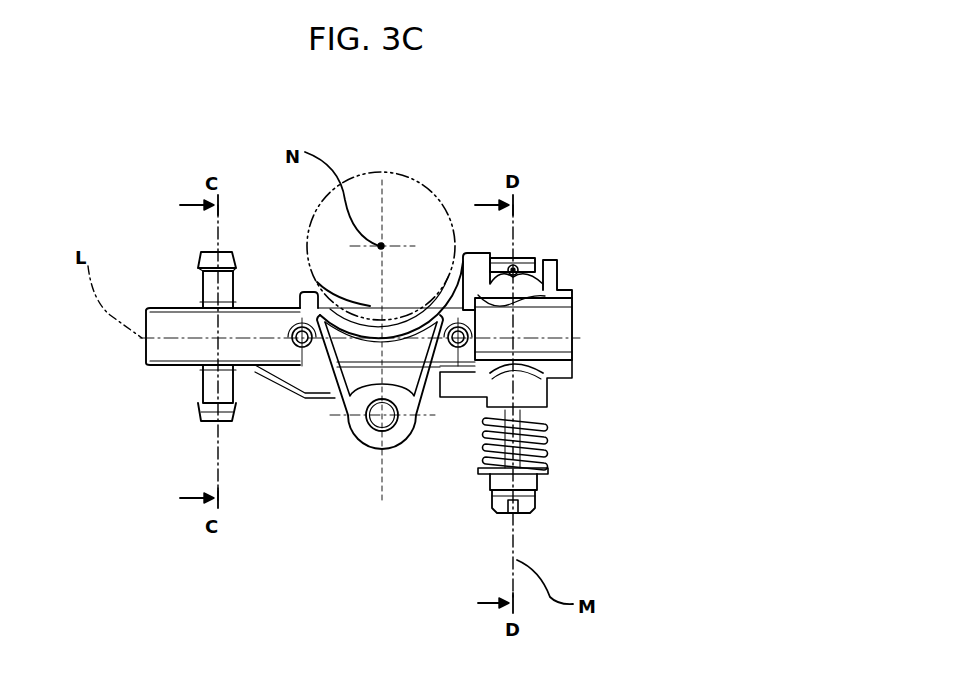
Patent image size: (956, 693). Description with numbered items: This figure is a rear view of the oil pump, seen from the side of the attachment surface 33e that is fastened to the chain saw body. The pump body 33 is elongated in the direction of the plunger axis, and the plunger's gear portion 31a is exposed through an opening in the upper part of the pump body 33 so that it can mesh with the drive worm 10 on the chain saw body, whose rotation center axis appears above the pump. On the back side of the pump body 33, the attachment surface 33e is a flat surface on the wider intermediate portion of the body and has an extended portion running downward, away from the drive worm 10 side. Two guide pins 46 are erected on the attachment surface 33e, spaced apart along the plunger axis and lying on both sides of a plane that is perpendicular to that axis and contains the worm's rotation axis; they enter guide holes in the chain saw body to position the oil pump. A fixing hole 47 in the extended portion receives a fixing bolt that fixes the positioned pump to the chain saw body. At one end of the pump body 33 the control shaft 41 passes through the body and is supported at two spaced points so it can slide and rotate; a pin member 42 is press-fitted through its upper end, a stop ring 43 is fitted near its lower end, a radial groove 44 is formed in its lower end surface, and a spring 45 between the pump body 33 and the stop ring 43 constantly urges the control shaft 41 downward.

The drive worm 10 is at (408, 171).
The gear portion 31a is at (317, 282).
The pump body 33 is at (178, 358).
The attachment surface 33e is at (335, 427).
The control shaft 41 is at (538, 483).
The pin member 42 is at (516, 265).
The stop ring 43 is at (485, 480).
The groove 44 is at (512, 515).
The spring 45 is at (545, 436).
The guide pins 46 is at (298, 345).
The fixing hole 47 is at (380, 426).